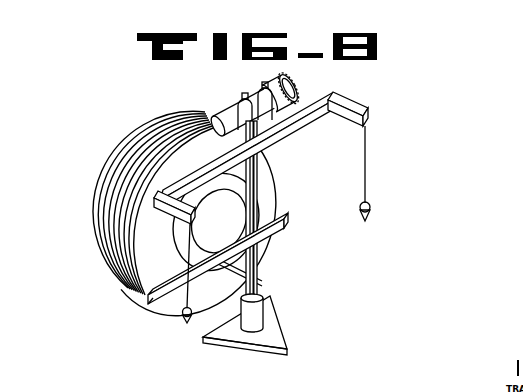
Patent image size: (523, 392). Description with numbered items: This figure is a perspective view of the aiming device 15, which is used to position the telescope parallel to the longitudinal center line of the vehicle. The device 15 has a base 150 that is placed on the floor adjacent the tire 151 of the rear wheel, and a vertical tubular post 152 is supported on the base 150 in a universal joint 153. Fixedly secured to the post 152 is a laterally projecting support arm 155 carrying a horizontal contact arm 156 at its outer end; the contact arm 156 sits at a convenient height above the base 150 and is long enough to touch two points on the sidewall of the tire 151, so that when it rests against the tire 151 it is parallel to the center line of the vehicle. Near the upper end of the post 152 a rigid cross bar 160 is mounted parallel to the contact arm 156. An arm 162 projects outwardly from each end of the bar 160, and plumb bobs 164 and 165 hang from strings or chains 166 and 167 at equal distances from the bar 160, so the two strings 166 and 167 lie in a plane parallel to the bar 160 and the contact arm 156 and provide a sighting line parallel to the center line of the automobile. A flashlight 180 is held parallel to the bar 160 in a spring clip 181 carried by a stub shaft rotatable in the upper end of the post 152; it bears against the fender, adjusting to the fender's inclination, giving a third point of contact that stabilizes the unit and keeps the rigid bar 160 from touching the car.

The aiming device 15 is at (360, 94).
The base 150 is at (268, 333).
The tire 151 is at (137, 183).
The vertical tubular post 152 is at (253, 186).
The universal joint 153 is at (250, 316).
The support arm 155 is at (236, 270).
The contact arm 156 is at (273, 232).
The cross bar 160 is at (274, 143).
The arm 162 is at (372, 120).
The plumb bob 164 is at (180, 314).
The plumb bob 165 is at (368, 206).
The string 166 is at (157, 264).
The string 167 is at (365, 159).
The flashlight 180 is at (296, 86).
The spring clip 181 is at (246, 100).